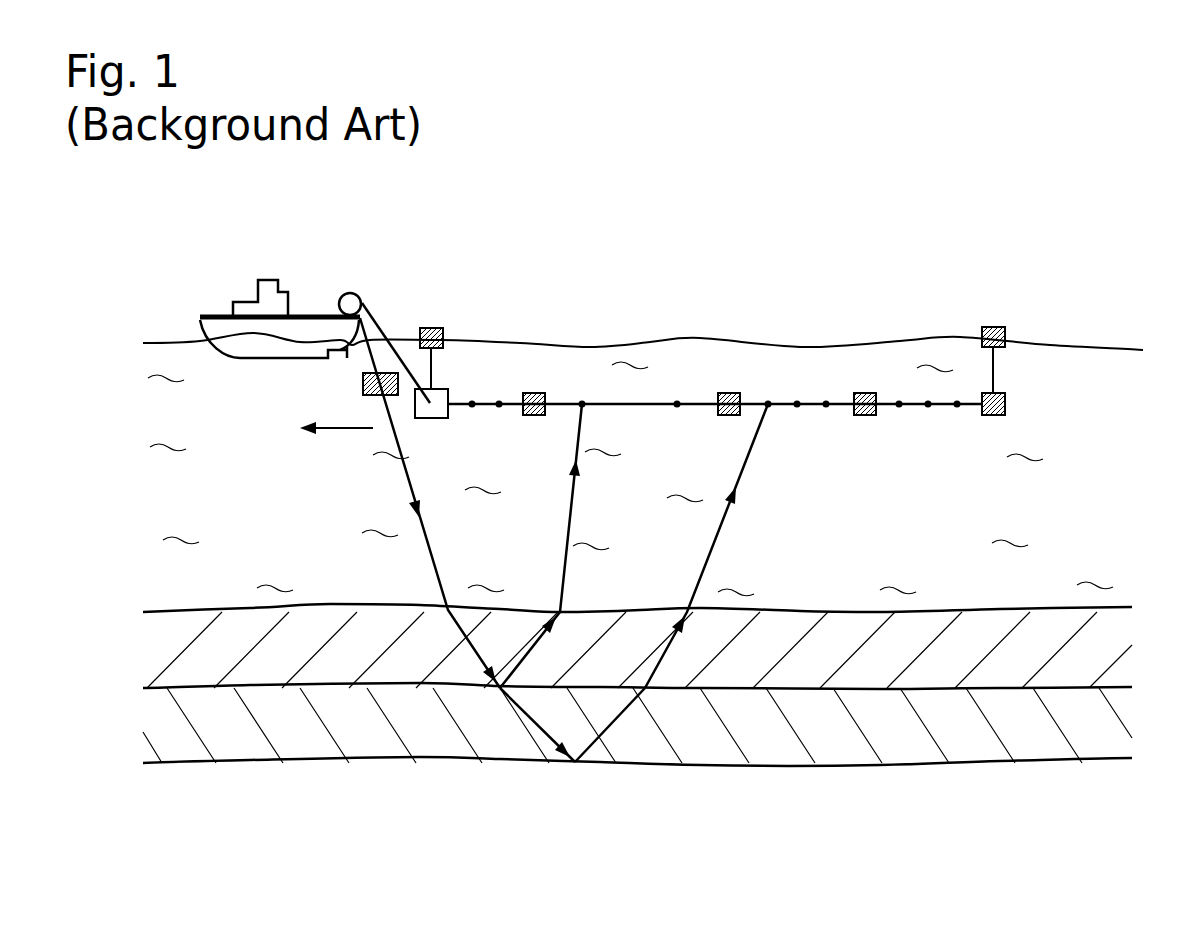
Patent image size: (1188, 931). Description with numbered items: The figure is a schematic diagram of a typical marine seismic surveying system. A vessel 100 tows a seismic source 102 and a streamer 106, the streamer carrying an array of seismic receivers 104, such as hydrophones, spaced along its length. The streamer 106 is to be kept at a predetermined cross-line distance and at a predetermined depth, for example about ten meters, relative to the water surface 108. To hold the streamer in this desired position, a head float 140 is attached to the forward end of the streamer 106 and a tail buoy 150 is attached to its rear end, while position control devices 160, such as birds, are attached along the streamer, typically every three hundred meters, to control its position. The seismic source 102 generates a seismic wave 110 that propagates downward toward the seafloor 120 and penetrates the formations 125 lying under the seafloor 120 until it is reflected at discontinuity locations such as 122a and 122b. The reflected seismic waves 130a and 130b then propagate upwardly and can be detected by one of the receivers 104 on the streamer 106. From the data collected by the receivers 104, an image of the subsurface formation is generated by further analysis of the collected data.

The vessel 100 is at (308, 315).
The seismic source 102 is at (360, 381).
The seismic receivers 104 is at (677, 408).
The streamer 106 is at (892, 423).
The water surface 108 is at (1050, 342).
The seismic wave 110 is at (437, 565).
The seafloor 120 is at (980, 612).
The discontinuity location 122a is at (511, 725).
The discontinuity location 122b is at (596, 742).
The formations 125 is at (268, 766).
The reflected seismic wave 130a is at (571, 510).
The reflected seismic wave 130b is at (717, 532).
The head float 140 is at (433, 327).
The tail buoy 150 is at (993, 327).
The position control devices 160 is at (536, 392).